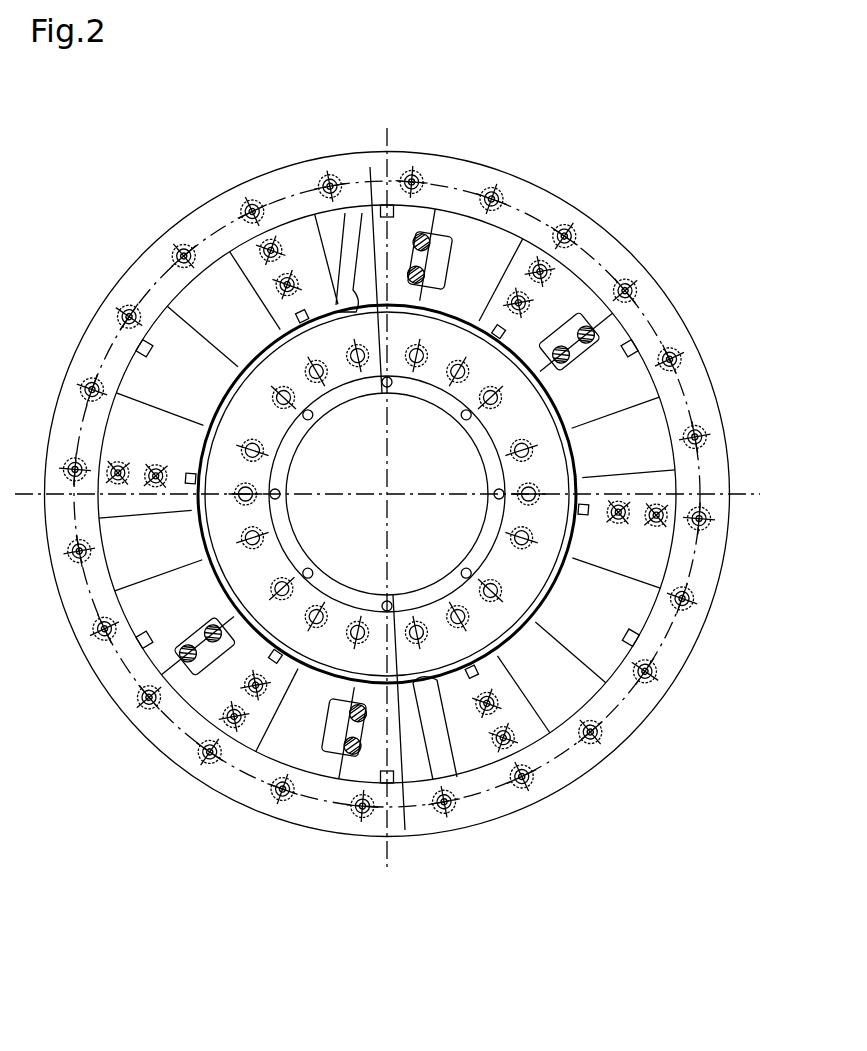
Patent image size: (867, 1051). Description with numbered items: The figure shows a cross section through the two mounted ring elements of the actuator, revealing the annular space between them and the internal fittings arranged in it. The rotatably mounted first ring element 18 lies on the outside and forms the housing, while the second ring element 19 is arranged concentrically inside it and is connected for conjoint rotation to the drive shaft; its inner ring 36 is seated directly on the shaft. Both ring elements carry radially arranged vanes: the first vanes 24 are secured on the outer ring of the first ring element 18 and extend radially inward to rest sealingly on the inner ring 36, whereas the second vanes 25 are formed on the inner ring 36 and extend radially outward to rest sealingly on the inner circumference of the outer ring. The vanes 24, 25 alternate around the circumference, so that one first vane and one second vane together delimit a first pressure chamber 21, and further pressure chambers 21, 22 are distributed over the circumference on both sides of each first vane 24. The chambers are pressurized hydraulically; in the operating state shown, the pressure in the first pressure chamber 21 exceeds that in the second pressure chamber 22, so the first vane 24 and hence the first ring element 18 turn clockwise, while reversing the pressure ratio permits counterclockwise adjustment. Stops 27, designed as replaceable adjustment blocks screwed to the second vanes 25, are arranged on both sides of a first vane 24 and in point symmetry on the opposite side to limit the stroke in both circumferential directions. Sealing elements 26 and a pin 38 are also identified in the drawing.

The first ring element 18 is at (312, 193).
The second ring element 19 is at (250, 413).
The pressure chamber 21 is at (482, 253).
The pressure chamber 22 is at (563, 323).
The vane 24 is at (560, 290).
The vane 25 is at (370, 243).
The sealing elements 26 is at (633, 352).
The stops 27 is at (440, 250).
The inner ring 36 is at (533, 418).
The pin 38 is at (212, 215).